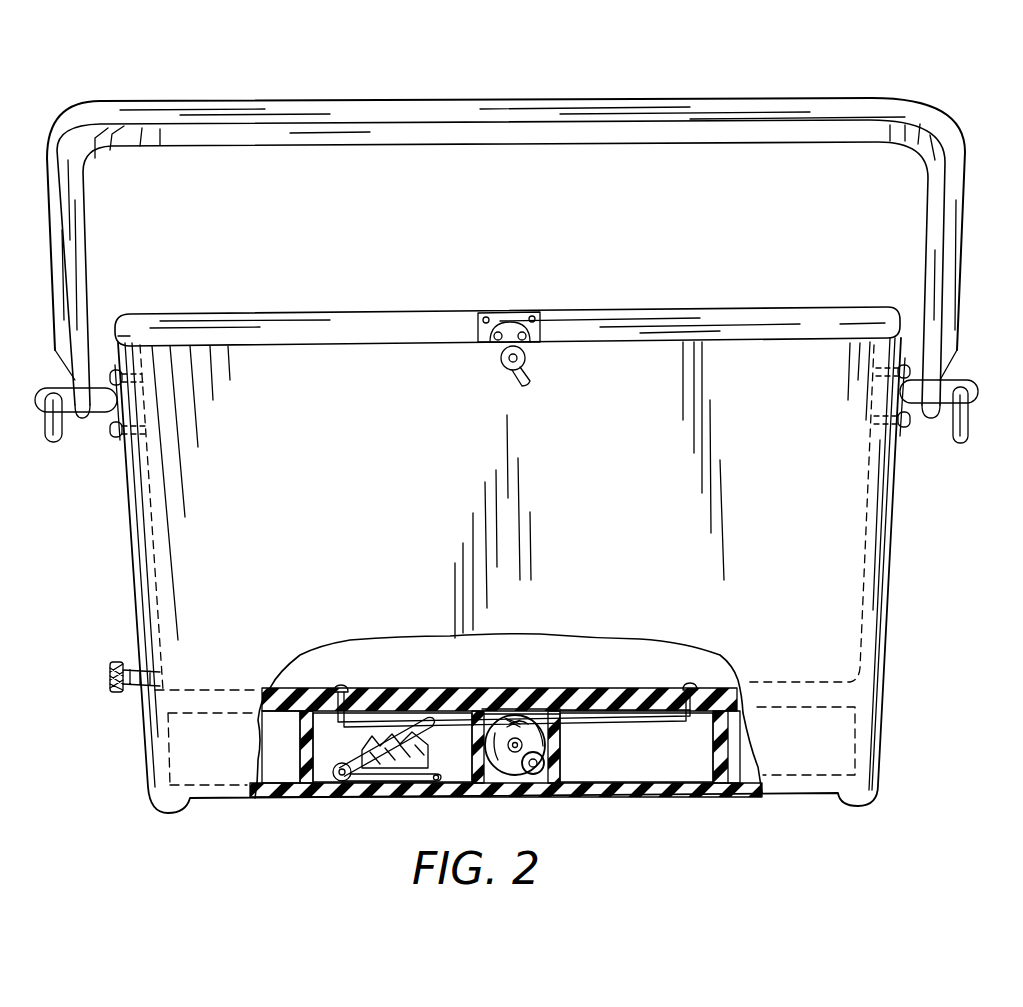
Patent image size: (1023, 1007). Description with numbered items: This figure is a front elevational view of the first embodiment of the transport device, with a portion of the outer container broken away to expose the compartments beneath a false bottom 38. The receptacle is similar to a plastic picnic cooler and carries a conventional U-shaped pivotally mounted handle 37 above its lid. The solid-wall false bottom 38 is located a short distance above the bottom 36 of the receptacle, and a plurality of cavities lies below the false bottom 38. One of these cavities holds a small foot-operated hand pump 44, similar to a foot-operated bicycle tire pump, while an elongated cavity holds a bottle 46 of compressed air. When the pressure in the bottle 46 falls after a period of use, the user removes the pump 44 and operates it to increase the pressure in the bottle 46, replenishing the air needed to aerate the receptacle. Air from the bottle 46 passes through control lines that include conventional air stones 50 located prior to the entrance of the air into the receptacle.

The bottom 36 is at (807, 794).
The U-shaped pivotally mounted handle 37 is at (520, 100).
The false bottom 38 is at (813, 708).
The foot-operated hand pump 44 is at (388, 767).
The bottle or tank of compressed air 46 is at (508, 793).
The air stones 50 is at (340, 684).